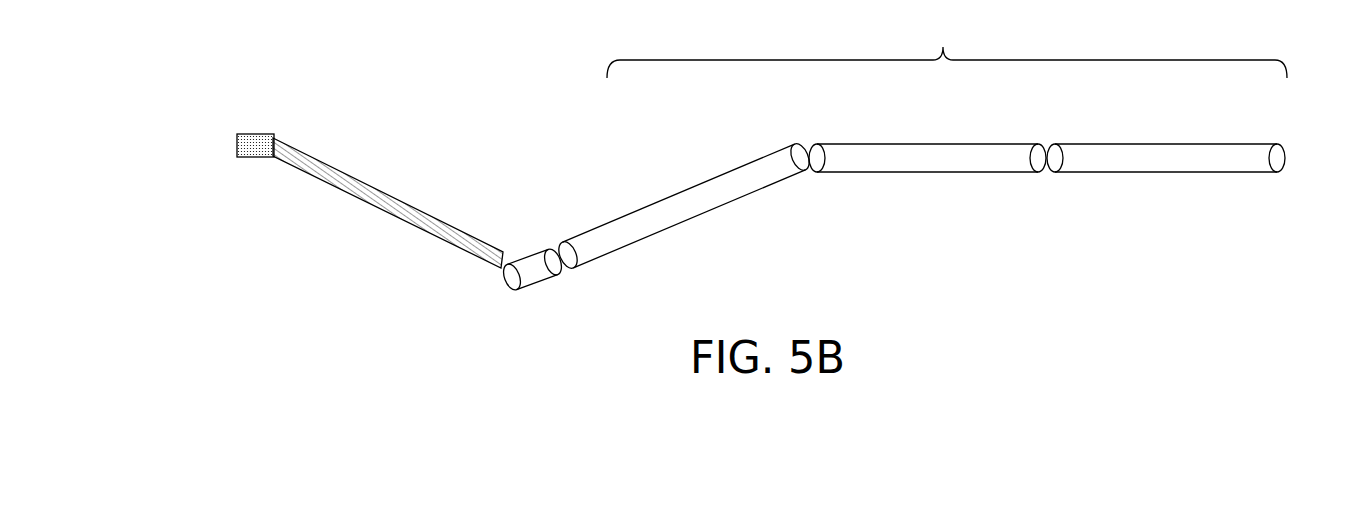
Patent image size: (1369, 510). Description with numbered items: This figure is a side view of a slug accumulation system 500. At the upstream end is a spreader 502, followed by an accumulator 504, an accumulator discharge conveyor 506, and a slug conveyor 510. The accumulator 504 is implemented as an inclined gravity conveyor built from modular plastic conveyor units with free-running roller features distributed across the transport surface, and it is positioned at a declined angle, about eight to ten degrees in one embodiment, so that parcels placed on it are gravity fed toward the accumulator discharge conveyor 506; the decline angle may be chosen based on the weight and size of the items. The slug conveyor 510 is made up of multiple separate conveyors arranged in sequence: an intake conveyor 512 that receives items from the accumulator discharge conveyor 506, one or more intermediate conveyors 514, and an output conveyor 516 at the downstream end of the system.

The slug accumulation system 500 is at (236, 46).
The spreader 502 is at (270, 115).
The accumulator 504 is at (398, 180).
The accumulator discharge conveyor 506 is at (538, 237).
The slug conveyor 510 is at (947, 46).
The intake conveyor 512 is at (729, 137).
The intermediate conveyor 514 is at (958, 127).
The output conveyor 516 is at (1200, 129).